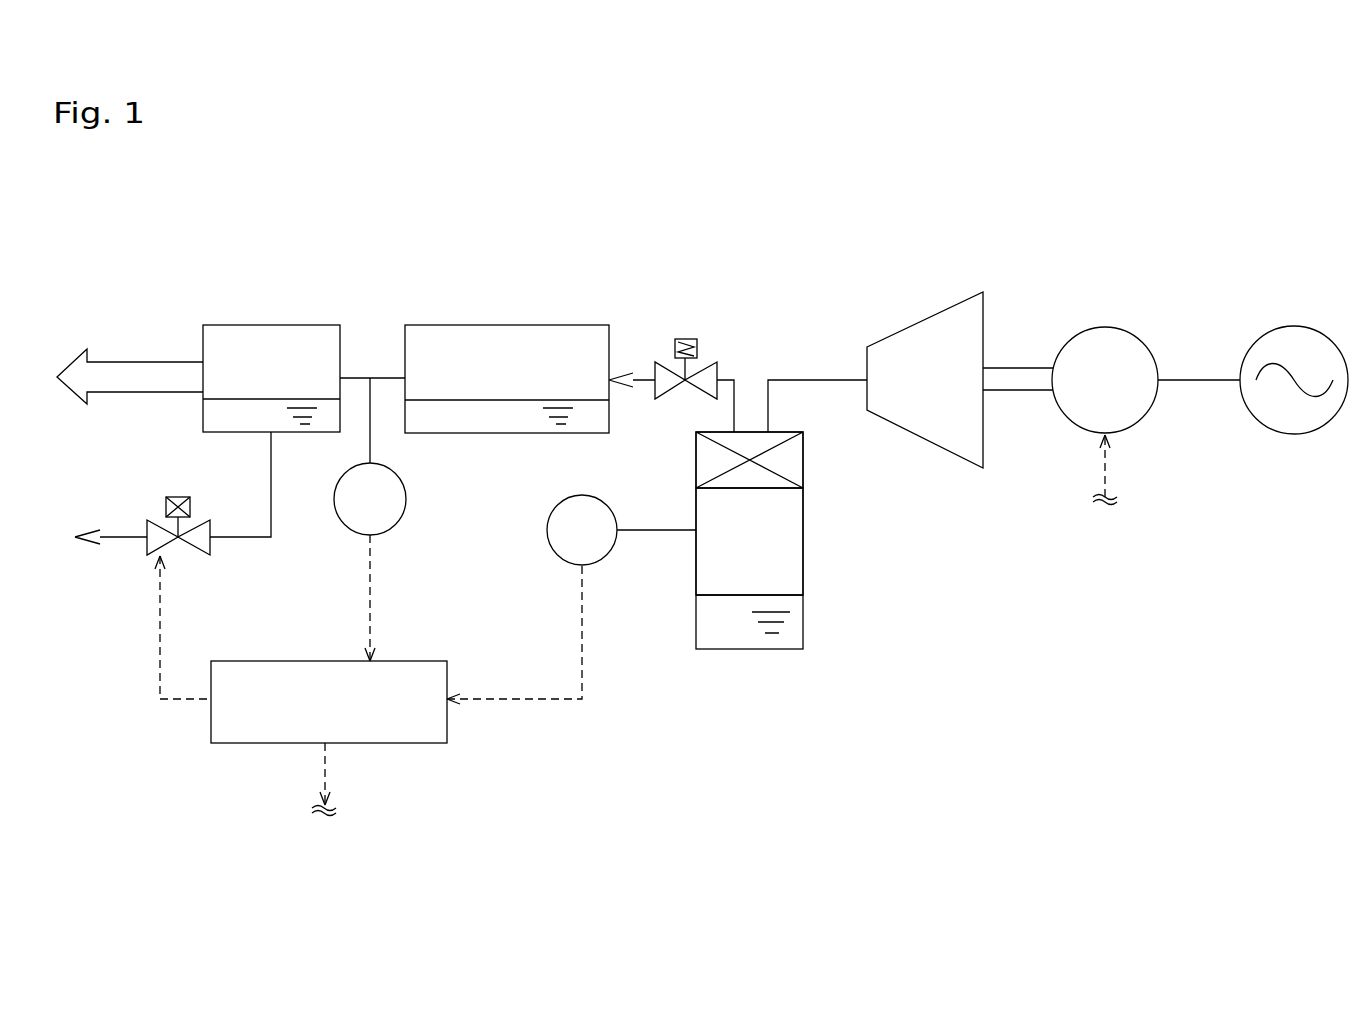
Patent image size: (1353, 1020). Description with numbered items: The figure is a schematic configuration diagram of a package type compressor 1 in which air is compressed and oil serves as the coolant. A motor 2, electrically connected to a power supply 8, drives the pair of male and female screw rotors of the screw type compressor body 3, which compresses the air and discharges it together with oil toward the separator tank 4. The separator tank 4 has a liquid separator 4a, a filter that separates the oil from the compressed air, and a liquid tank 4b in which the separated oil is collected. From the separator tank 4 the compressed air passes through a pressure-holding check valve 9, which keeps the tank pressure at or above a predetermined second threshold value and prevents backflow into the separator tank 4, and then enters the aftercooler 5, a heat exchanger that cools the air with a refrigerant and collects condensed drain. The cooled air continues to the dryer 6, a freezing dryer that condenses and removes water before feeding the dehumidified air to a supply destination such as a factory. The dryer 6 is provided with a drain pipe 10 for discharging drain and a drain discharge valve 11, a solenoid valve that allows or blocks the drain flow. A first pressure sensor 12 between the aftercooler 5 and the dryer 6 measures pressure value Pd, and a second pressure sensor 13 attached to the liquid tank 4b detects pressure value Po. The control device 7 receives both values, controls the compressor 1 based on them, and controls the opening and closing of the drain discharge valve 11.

The compressor 1 is at (1226, 215).
The motor 2 is at (1111, 327).
The compressor body 3 is at (933, 316).
The separator tank 4 is at (811, 540).
The liquid separator 4a is at (798, 463).
The liquid tank 4b is at (870, 482).
The aftercooler 5 is at (493, 325).
The dryer 6 is at (264, 325).
The control device 7 is at (447, 743).
The power supply 8 is at (1291, 434).
The pressure-holding check valve 9 is at (691, 339).
The drain pipe 10 is at (262, 538).
The drain discharge valve 11 is at (203, 555).
The first pressure sensor 12 is at (398, 518).
The second pressure sensor 13 is at (568, 566).